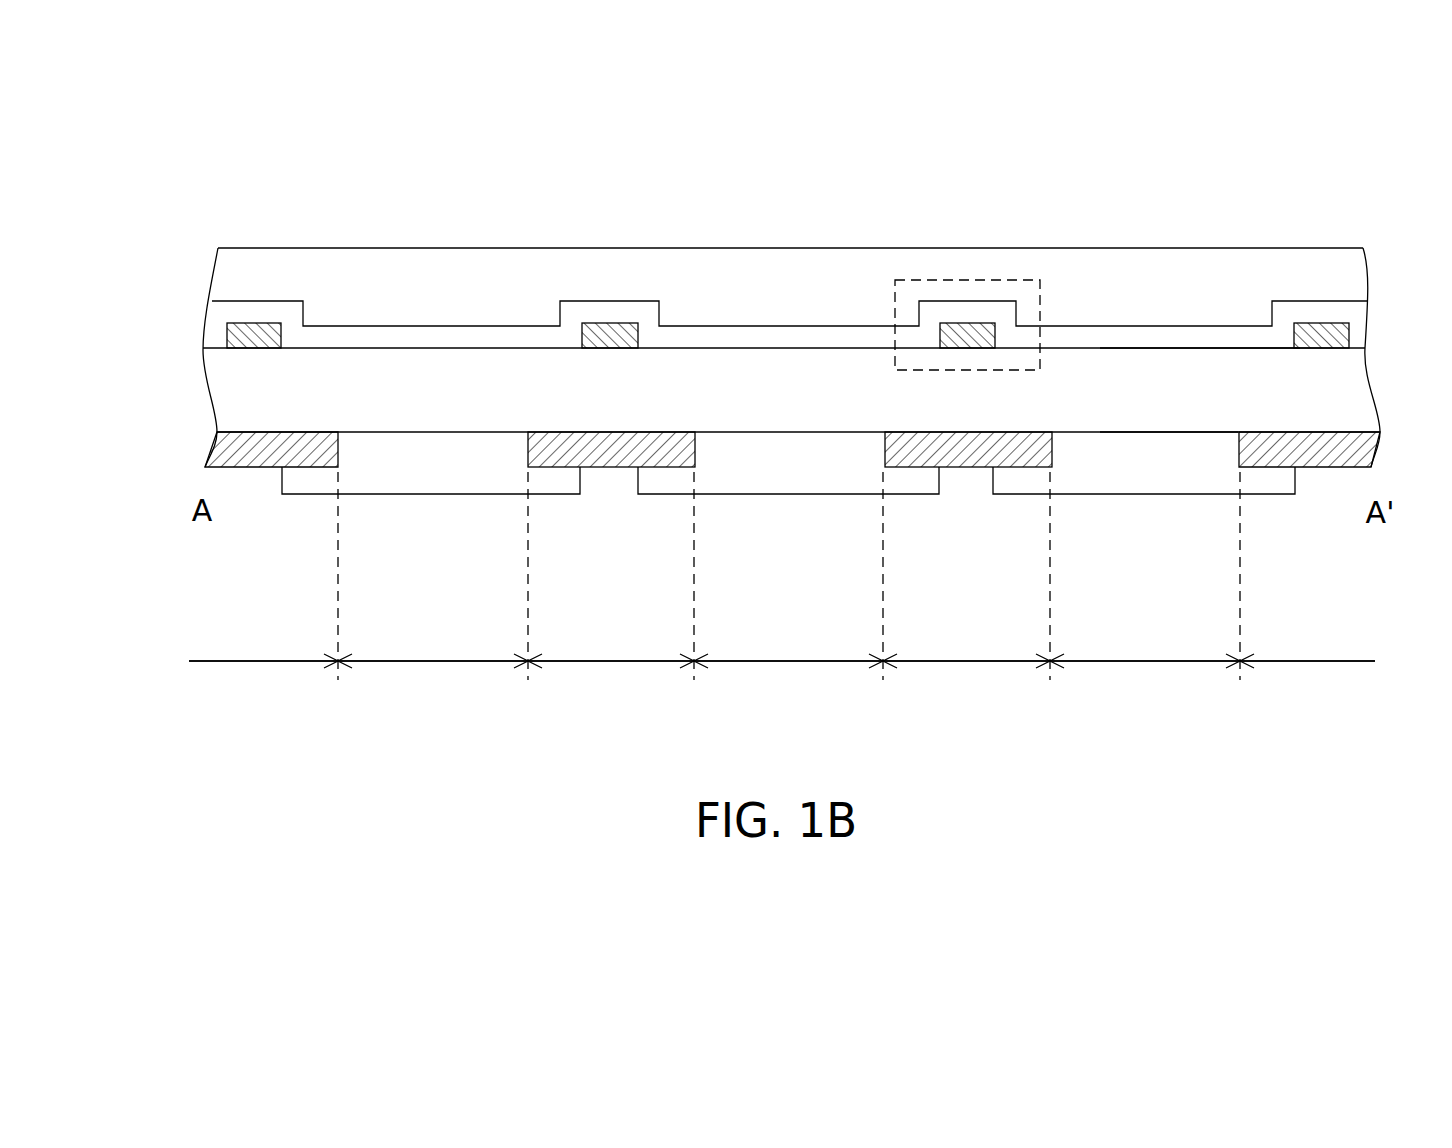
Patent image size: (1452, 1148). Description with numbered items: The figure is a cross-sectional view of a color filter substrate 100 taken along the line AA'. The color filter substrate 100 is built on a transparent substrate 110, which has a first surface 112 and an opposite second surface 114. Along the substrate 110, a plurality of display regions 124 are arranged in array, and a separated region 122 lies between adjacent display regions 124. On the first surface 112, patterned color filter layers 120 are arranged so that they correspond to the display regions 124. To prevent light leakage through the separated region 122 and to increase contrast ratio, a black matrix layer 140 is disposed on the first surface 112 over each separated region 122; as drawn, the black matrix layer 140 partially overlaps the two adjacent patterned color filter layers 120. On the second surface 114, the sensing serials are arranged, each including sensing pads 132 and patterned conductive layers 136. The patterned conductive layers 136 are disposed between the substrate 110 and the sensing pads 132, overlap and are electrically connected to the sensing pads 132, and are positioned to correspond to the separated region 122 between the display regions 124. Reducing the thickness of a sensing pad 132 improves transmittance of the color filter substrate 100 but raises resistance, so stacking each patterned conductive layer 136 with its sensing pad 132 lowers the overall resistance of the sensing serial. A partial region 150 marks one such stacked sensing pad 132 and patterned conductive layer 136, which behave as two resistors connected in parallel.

The color filter substrate 100 is at (1367, 742).
The substrate 110 is at (1350, 390).
The first surface 112 is at (1193, 433).
The second surface 114 is at (1205, 346).
The patterned color filter layer 120 is at (486, 475).
The separated region 122 is at (252, 482).
The display region 124 is at (439, 662).
The sensing pad 132 is at (233, 313).
The patterned conductive layer 136 is at (229, 332).
The black matrix layer 140 is at (233, 457).
The partial region 150 is at (1019, 281).